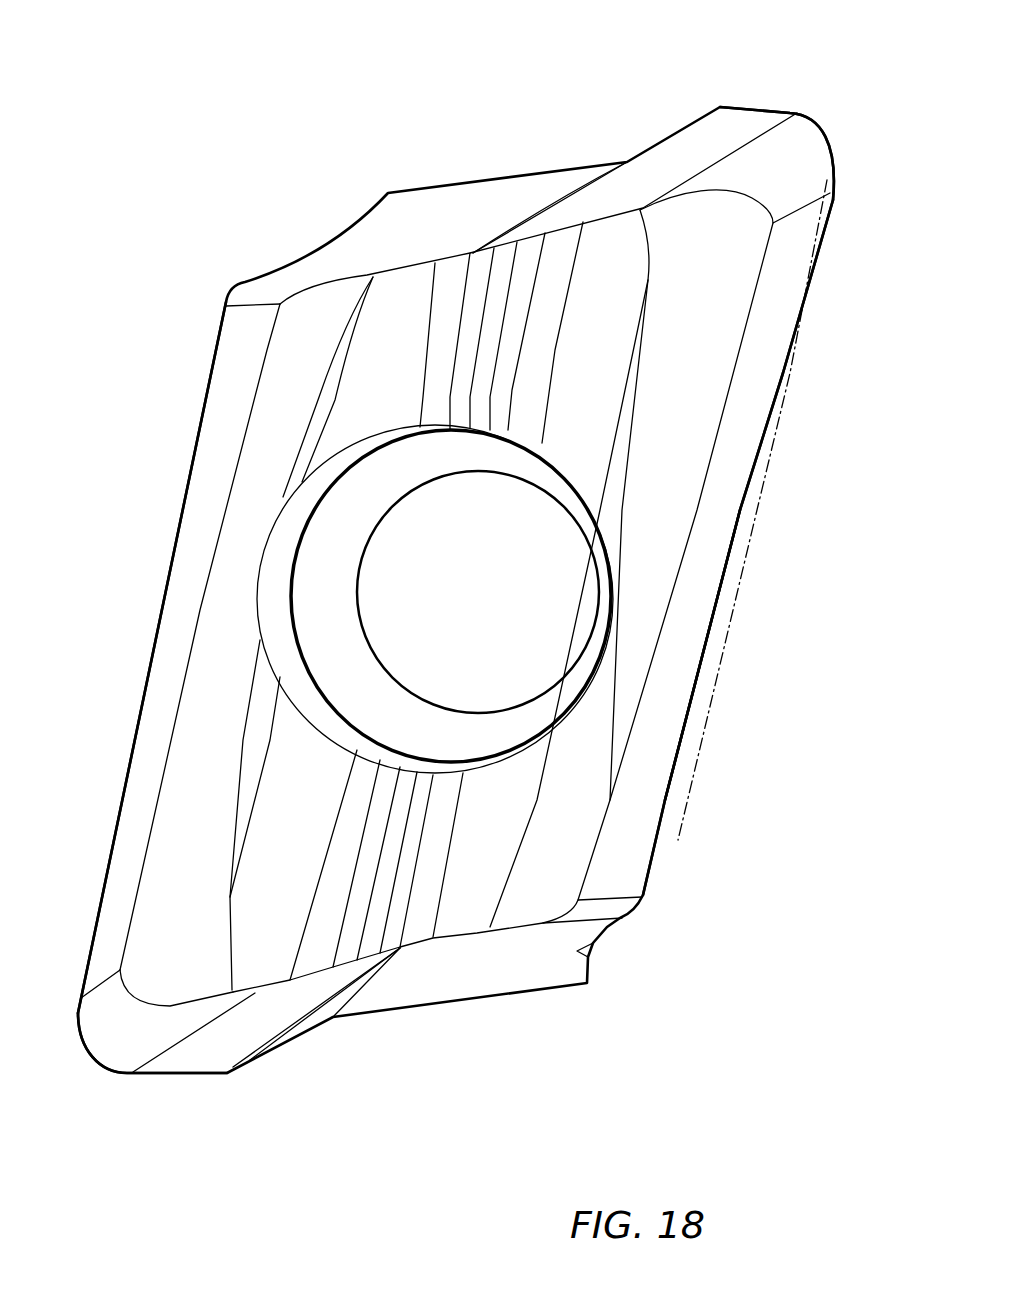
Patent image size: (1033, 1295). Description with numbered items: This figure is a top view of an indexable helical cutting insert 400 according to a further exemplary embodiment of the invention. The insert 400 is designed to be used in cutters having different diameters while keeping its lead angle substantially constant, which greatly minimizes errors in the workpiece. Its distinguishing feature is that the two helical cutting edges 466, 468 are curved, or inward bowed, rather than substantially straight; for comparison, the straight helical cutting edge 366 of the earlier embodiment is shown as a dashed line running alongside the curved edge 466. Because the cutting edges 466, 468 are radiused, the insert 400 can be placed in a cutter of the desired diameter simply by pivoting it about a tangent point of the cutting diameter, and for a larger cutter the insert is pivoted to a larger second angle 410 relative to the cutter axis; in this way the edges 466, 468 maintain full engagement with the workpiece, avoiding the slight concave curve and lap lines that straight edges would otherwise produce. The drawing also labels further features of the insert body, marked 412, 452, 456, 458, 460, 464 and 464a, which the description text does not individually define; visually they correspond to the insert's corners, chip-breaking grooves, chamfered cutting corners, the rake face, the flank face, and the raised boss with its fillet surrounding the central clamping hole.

The helical cutting insert 400 is at (148, 83).
The second angle 410 is at (229, 1092).
The second corner of insert 412 is at (766, 96).
The chip breaker grooves 452 is at (444, 318).
The cutting corner chamfer 456 is at (517, 146).
The rake face 458 is at (138, 478).
The flank side face 460 is at (784, 529).
The raised boss around clamping hole 464 is at (400, 465).
The fillet of boss 464a is at (277, 543).
The helical cutting edge 466 is at (722, 590).
The helical cutting edge 468 is at (164, 598).
The helical cutting edge 366 is at (790, 374).